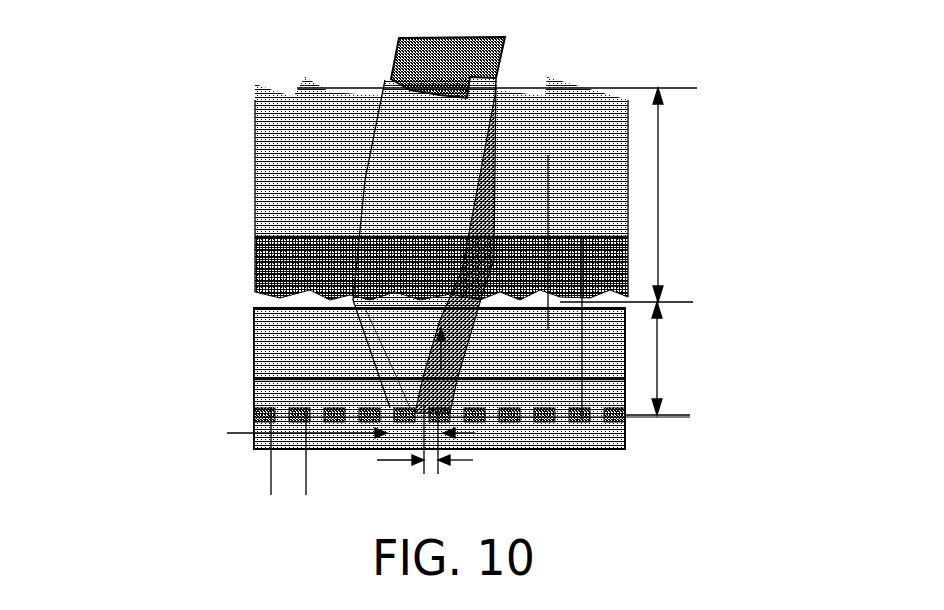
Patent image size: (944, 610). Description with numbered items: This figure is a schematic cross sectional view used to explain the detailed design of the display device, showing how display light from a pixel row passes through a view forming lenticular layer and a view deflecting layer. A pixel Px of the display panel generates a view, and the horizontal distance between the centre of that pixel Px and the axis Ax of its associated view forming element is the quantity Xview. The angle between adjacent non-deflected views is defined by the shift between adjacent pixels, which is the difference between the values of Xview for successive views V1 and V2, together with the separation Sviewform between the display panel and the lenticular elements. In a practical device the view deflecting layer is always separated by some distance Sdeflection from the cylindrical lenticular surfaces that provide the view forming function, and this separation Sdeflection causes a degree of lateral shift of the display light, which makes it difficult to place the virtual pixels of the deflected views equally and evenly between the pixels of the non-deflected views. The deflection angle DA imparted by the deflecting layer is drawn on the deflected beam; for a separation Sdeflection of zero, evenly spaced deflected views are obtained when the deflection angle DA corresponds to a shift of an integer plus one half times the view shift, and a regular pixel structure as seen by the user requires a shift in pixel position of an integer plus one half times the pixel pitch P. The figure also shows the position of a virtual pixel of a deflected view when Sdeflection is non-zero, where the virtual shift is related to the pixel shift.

The axis of view forming element Ax is at (560, 184).
The horizontal pixel-to-axis distance Xview is at (564, 279).
The separation between view deflecting layer and lenticular surfaces Sdeflection is at (724, 195).
The separation between display panel and lenticular elements Sviewform is at (721, 358).
The deflection angle DA is at (442, 355).
The pixel pitch P is at (288, 451).
The first view V1 is at (436, 390).
The second view V2 is at (502, 362).
The pixel Px is at (590, 433).